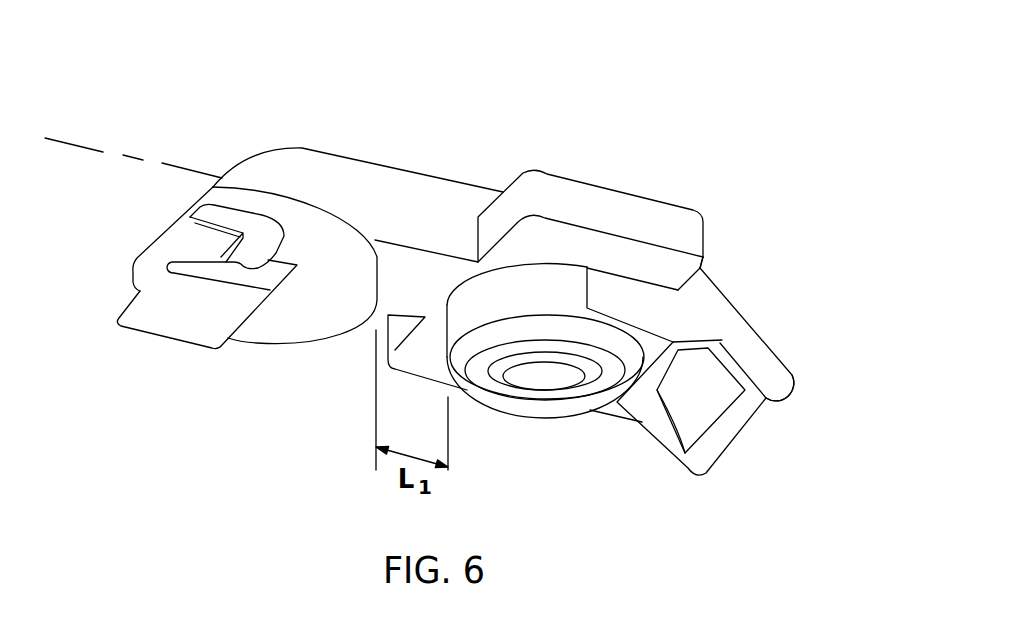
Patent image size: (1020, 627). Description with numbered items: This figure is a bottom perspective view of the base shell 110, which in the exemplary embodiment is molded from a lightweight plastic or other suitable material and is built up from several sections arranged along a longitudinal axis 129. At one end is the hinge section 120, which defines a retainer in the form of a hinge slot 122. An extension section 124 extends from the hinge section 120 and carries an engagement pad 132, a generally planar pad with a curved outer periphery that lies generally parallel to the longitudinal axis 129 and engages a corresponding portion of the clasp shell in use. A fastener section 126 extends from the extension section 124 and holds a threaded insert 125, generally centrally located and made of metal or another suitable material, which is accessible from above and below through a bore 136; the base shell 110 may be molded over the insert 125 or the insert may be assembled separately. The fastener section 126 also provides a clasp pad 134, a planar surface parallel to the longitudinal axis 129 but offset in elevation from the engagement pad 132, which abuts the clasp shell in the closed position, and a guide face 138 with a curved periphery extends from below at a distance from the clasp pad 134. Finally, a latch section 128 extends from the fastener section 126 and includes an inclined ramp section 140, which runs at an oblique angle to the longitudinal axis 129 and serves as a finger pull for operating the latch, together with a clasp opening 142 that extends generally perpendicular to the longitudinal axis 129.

The base shell 110 is at (455, 267).
The hinge section 120 is at (168, 325).
The hinge slot 122 is at (150, 267).
The extension section 124 is at (343, 153).
The threaded insert 125 is at (527, 397).
The fastener section 126 is at (600, 202).
The latch section 128 is at (773, 370).
The longitudinal axis 129 is at (83, 146).
The engagement pad 132 is at (277, 325).
The clasp pad 134 is at (680, 266).
The bore 136 is at (573, 380).
The guide face 138 is at (483, 297).
The ramp section 140 is at (760, 337).
The clasp opening 142 is at (710, 408).